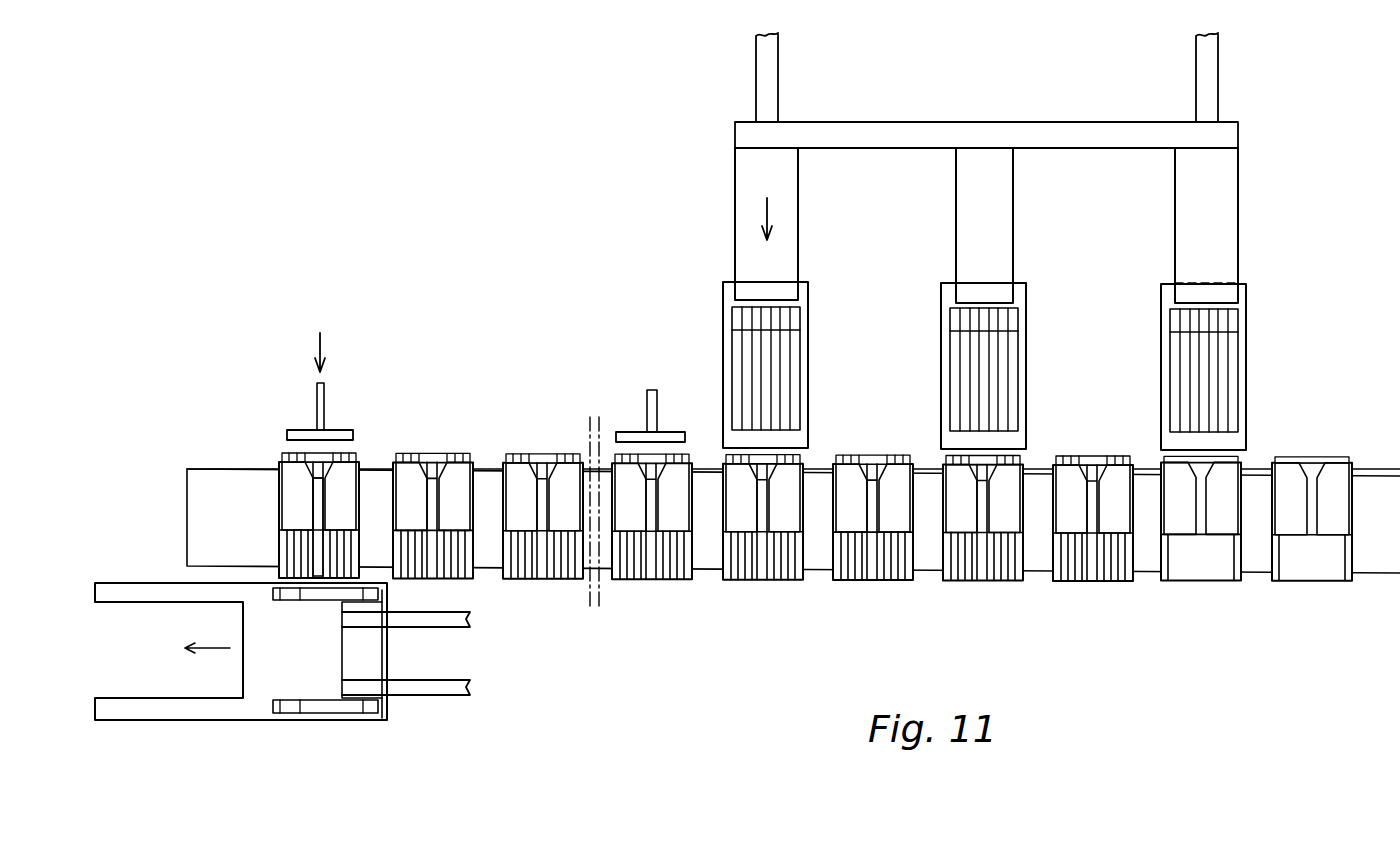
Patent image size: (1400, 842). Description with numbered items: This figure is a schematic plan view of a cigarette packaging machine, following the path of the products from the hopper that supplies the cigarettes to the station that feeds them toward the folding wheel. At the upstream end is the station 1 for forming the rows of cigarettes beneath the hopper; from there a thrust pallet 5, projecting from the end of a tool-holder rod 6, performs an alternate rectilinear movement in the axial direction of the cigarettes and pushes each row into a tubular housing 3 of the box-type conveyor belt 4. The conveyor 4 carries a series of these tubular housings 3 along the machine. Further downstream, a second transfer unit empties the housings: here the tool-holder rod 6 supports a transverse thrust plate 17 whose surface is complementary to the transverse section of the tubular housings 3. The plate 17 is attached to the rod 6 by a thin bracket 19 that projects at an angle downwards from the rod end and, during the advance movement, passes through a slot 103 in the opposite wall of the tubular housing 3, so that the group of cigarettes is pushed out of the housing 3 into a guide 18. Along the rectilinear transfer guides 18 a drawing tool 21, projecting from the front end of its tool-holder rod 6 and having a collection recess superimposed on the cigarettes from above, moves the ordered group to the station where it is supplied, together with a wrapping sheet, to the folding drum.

The station for forming the rows 1 is at (808, 366).
The tubular housing 3 is at (289, 493).
The box-type conveyor belt 4 is at (929, 572).
The thrust pallet 5 is at (798, 228).
The tool-holder rod 6 is at (778, 75).
The transverse thrust plate 17 is at (345, 436).
The guide 18 is at (200, 722).
The thin bracket 19 is at (317, 400).
The drawing tool 21 is at (318, 712).
The slot 103 is at (316, 492).